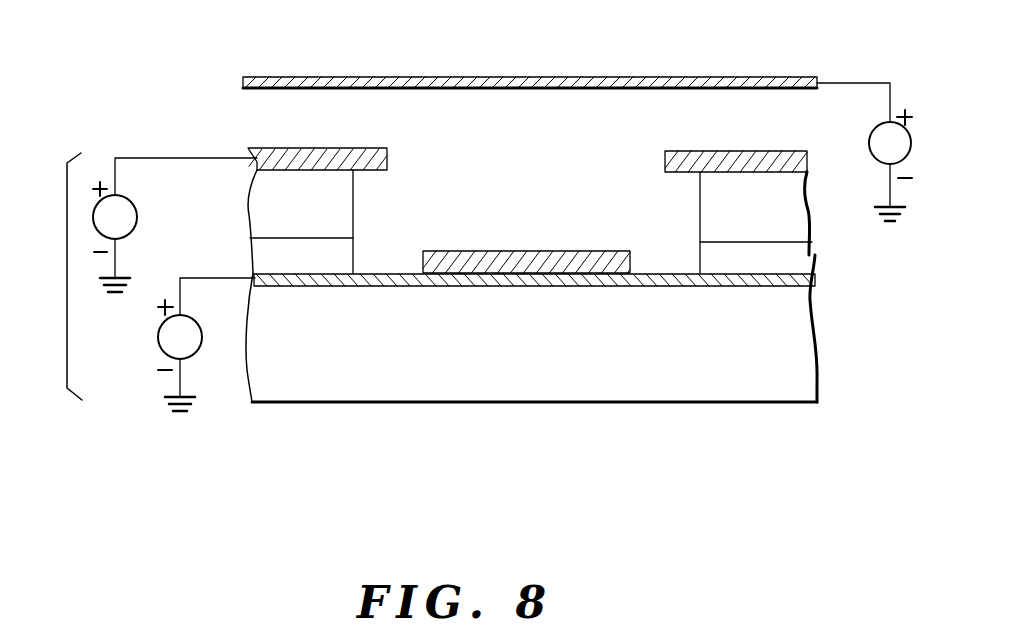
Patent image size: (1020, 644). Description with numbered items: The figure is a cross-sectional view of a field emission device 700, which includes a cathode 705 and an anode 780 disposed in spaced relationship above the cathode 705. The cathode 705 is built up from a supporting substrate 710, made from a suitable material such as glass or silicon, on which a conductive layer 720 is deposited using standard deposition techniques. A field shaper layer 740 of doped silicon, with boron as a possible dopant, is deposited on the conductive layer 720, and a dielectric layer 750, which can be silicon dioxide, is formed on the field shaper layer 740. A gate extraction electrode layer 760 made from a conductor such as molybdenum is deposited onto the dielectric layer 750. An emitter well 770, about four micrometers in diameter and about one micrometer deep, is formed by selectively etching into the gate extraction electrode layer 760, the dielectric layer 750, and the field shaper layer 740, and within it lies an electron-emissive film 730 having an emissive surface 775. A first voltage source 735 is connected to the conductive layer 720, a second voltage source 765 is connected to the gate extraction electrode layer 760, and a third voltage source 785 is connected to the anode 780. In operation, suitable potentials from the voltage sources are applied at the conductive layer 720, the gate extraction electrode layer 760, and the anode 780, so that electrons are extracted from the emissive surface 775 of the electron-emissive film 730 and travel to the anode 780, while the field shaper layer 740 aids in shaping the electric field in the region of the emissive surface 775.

The field emission device 700 is at (553, 503).
The cathode 705 is at (49, 276).
The supporting substrate 710 is at (333, 387).
The conductive layer 720 is at (818, 282).
The electron-emissive film 730 is at (592, 250).
The first voltage source 735 is at (200, 343).
The field shaper layer 740 is at (800, 262).
The dielectric layer 750 is at (797, 213).
The gate extraction electrode layer 760 is at (688, 151).
The second voltage source 765 is at (137, 227).
The emitter well 770 is at (542, 169).
The emissive surface 775 is at (467, 250).
The anode 780 is at (285, 76).
The third voltage source 785 is at (872, 140).